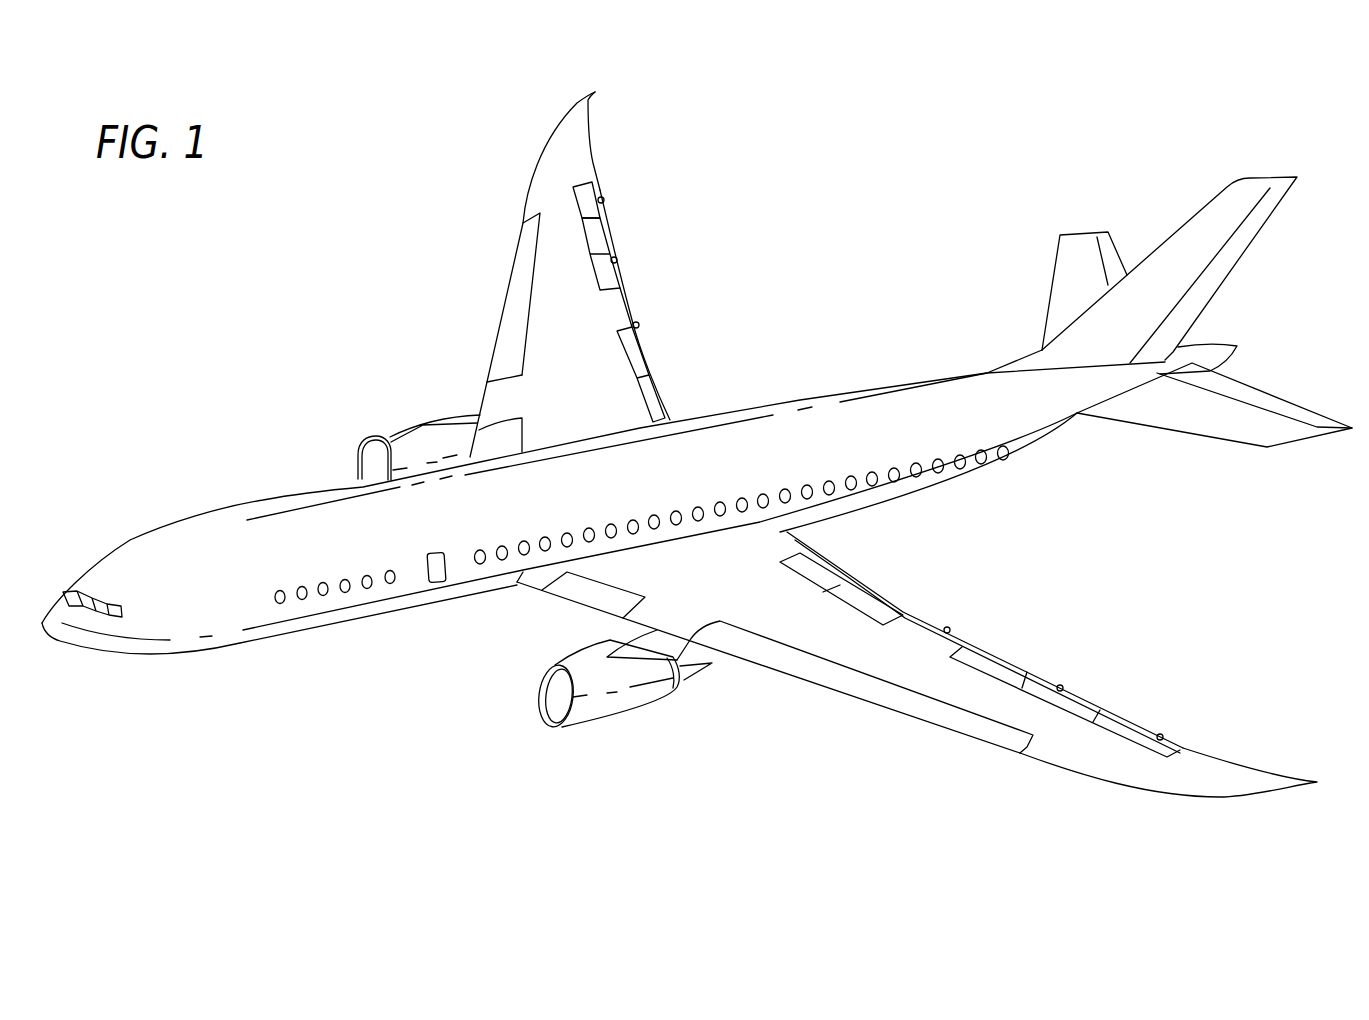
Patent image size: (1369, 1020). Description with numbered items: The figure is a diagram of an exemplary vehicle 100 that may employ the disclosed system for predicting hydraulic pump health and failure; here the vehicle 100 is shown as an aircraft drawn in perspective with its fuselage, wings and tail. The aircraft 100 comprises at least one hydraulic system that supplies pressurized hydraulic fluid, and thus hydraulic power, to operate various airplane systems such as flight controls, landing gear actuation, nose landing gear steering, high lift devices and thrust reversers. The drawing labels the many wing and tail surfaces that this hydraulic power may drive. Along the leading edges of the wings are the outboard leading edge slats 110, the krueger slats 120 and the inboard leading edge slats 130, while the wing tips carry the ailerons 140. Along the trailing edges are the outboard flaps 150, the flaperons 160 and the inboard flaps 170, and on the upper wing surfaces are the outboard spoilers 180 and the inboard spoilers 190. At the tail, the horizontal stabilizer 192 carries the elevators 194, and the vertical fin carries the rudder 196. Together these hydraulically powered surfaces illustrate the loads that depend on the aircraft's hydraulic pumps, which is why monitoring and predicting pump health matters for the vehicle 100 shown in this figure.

The vehicle 100 is at (284, 336).
The outboard leading edge slats 110 is at (522, 223).
The krueger slats 120 is at (485, 407).
The inboard leading edge slats 130 is at (472, 448).
The ailerons 140 is at (592, 158).
The outboard flaps 150 is at (603, 245).
The flaperons 160 is at (622, 308).
The inboard flaps 170 is at (655, 398).
The outboard spoilers 180 is at (955, 697).
The inboard spoilers 190 is at (787, 590).
The horizontal stabilizer 192 is at (1172, 427).
The elevators 194 is at (1263, 399).
The rudder 196 is at (1265, 222).